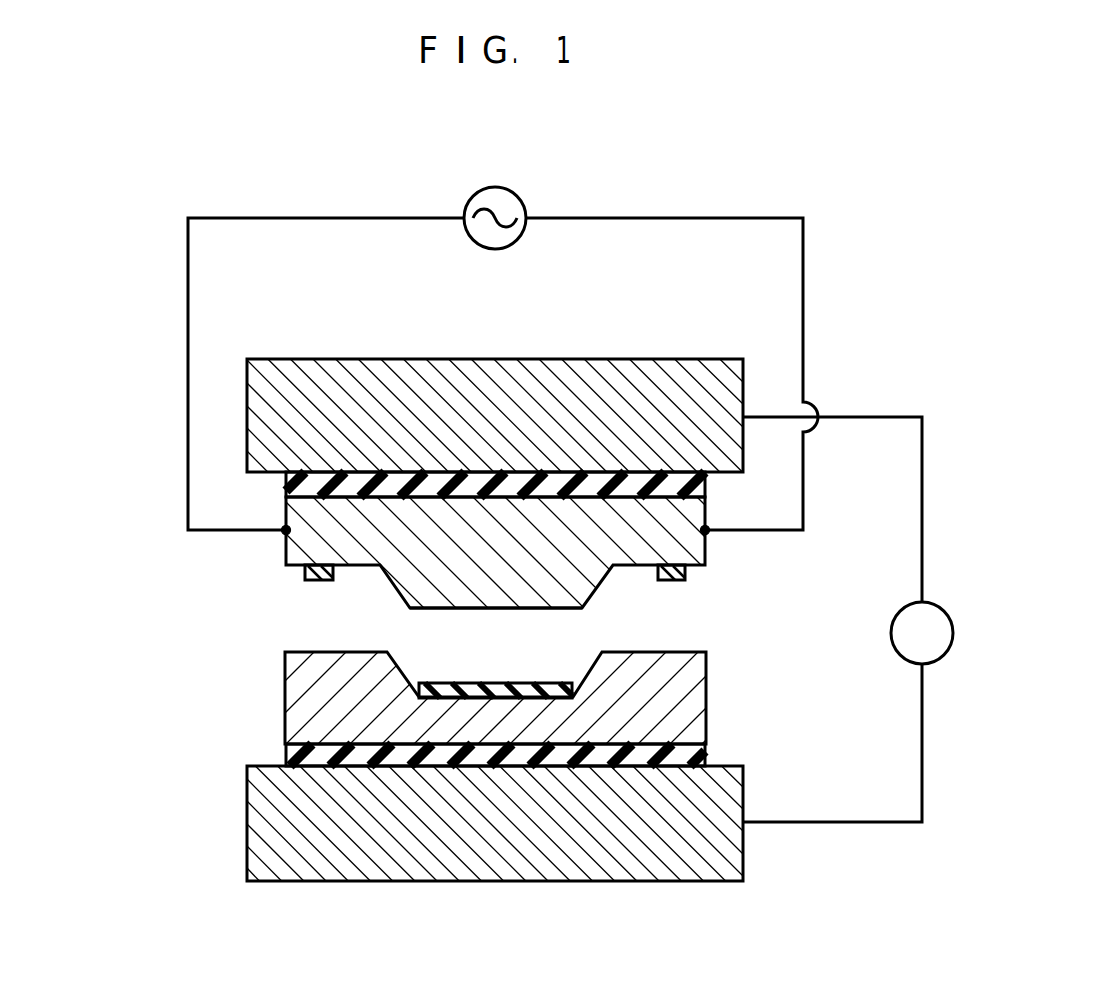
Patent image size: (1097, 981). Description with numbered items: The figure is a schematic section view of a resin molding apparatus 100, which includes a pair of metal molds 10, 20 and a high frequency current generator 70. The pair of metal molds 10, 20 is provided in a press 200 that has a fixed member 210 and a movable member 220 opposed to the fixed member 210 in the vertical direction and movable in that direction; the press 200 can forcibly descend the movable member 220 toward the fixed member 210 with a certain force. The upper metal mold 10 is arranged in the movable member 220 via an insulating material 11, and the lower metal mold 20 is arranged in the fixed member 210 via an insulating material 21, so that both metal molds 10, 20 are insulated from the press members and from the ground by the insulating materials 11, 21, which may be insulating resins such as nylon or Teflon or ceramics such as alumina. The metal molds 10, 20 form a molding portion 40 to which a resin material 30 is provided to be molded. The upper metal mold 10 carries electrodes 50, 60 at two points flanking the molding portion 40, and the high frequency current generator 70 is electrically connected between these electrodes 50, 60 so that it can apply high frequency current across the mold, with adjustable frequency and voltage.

The resin molding apparatus 100 is at (945, 331).
The metal mold 10 is at (705, 505).
The insulating material 11 is at (286, 485).
The metal mold 20 is at (706, 693).
The insulating material 21 is at (286, 752).
The resin material 30 is at (447, 683).
The molding portion 40 is at (550, 688).
The electrode 50 is at (286, 530).
The electrode 60 is at (705, 530).
The high frequency current generator 70 is at (518, 200).
The press 200 is at (948, 612).
The fixed member 210 is at (247, 840).
The movable member 220 is at (247, 393).